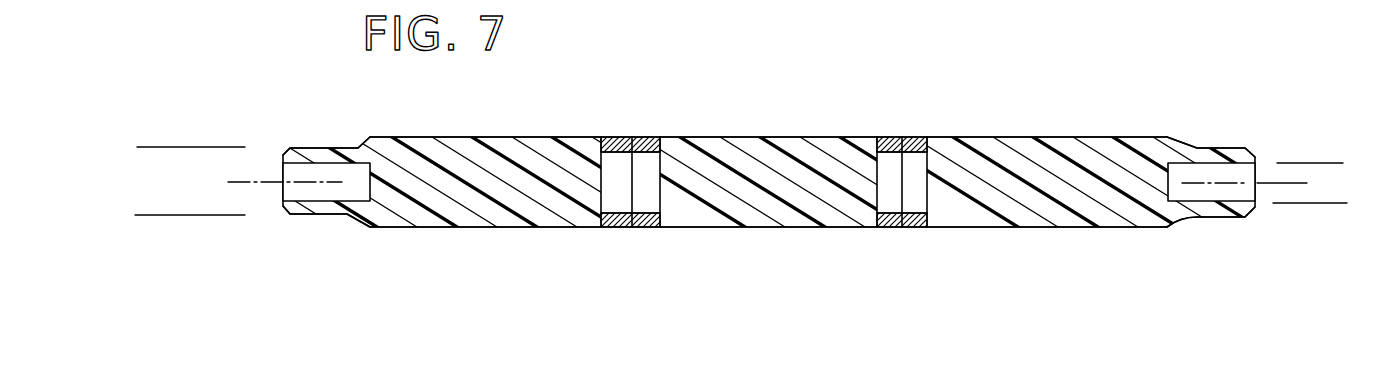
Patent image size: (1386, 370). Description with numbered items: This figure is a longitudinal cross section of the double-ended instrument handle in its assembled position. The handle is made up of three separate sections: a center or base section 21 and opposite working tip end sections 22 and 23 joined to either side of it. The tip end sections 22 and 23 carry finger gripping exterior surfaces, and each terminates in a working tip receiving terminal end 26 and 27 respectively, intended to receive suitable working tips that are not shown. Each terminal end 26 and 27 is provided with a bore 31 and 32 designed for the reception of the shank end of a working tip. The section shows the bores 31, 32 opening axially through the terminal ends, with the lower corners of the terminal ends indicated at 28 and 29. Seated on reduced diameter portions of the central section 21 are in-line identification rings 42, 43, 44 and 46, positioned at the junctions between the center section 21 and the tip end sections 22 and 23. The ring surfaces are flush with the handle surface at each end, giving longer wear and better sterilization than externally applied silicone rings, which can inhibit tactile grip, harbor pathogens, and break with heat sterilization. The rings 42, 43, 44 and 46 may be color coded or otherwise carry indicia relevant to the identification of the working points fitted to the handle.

The center or base section 21 is at (790, 137).
The working tip end section 22 is at (507, 137).
The working tip end section 23 is at (1038, 137).
The working tip receiving terminal end 26 is at (321, 148).
The working tip receiving terminal end 27 is at (1212, 148).
The left end portion (lower) 28 is at (343, 214).
The right end portion (lower) 29 is at (1190, 217).
The bore 31 is at (283, 197).
The bore 32 is at (1245, 198).
The in-line identification ring 42 is at (618, 137).
The in-line identification ring 43 is at (648, 228).
The in-line identification ring 44 is at (888, 137).
The in-line identification ring 46 is at (917, 228).